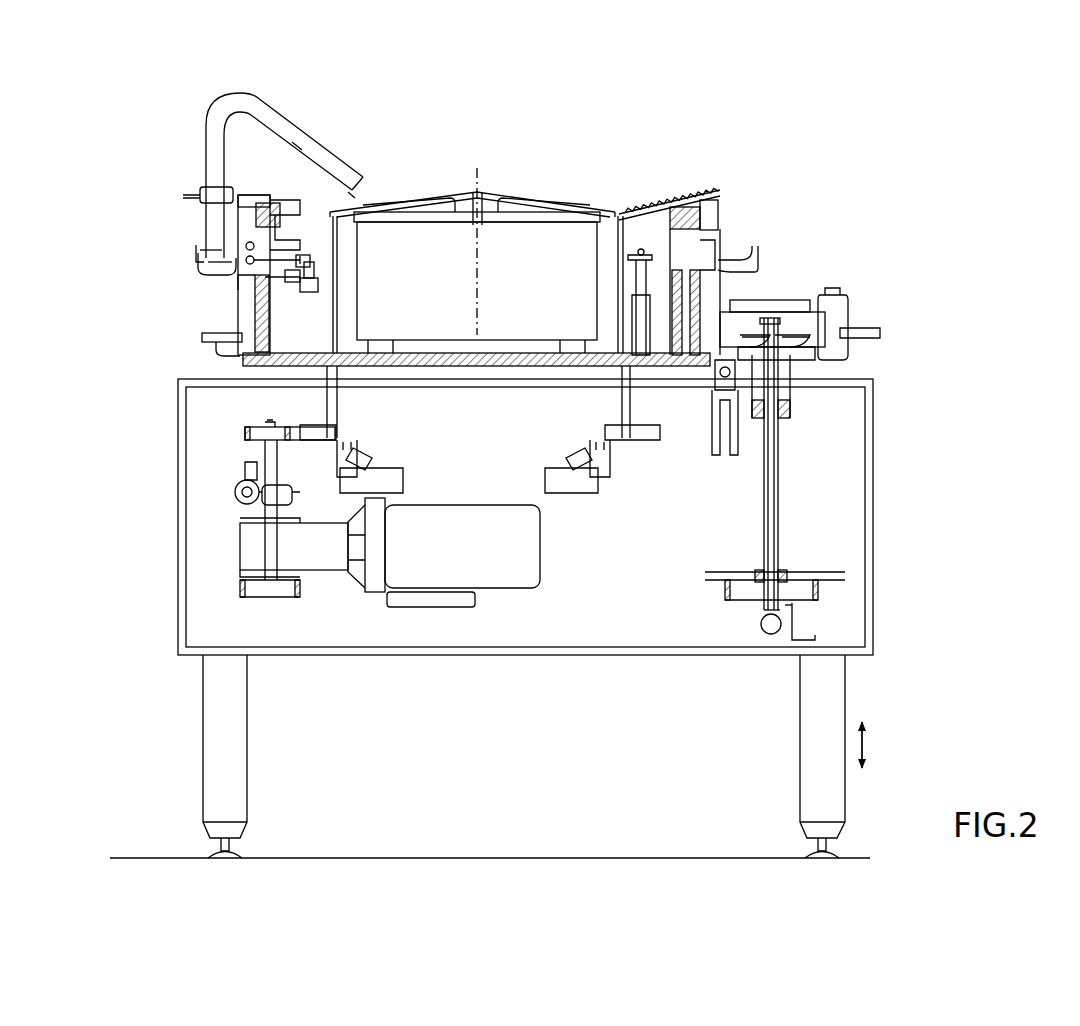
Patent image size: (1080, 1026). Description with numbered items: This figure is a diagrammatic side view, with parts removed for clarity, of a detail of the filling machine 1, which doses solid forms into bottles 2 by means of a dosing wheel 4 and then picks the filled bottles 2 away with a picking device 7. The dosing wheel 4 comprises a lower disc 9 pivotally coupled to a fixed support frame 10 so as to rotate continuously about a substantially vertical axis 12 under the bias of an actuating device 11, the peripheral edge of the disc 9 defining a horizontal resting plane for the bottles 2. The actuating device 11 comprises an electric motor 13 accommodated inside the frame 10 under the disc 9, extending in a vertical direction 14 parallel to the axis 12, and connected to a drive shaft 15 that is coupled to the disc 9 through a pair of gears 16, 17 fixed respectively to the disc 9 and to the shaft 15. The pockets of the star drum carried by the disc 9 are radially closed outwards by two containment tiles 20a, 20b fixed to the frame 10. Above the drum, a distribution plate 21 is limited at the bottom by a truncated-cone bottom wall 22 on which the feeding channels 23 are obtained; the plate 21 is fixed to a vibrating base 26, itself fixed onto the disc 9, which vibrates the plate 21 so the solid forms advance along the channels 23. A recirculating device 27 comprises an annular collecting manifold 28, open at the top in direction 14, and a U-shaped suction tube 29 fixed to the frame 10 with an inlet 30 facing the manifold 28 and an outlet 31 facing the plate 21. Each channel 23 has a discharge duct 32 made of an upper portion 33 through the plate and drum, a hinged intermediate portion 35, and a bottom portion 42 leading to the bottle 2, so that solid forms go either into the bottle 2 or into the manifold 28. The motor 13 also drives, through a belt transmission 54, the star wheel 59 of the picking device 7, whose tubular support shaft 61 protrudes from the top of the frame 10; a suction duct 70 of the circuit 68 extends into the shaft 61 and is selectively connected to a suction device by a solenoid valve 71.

The machine 1 is at (925, 190).
The bottles 2 is at (236, 352).
The dosing wheel 4 is at (737, 152).
The picking device 7 is at (797, 240).
The lower disc 9 is at (533, 366).
The fixed support frame 10 is at (868, 628).
The actuating device 11 is at (497, 602).
The axis 12 is at (463, 176).
The electric motor 13 is at (524, 590).
The vertical direction 14 is at (879, 745).
The drive shaft 15 is at (268, 448).
The gear 16 is at (316, 441).
The gear 17 is at (267, 428).
The containment tile 20a is at (204, 338).
The containment tile 20b is at (868, 330).
The distribution plate 21 is at (621, 191).
The bottom wall 22 is at (656, 201).
The feeding channels 23 is at (700, 200).
The vibrating base 26 is at (428, 330).
The recirculating device 27 is at (205, 118).
The annular collecting manifold 28 is at (195, 253).
The suction tube 29 is at (307, 142).
The inlet 30 is at (212, 268).
The outlet 31 is at (368, 190).
The discharge duct 32 is at (220, 229).
The upper portion 33 is at (242, 212).
The intermediate portion 35 is at (246, 256).
The bottom portion 42 is at (252, 270).
The belt transmission 54 is at (260, 596).
The star wheel 59 is at (801, 292).
The tubular support shaft 61 is at (779, 511).
The circuit 68 is at (752, 648).
The suction duct 70 is at (775, 536).
The solenoid valve 71 is at (773, 635).